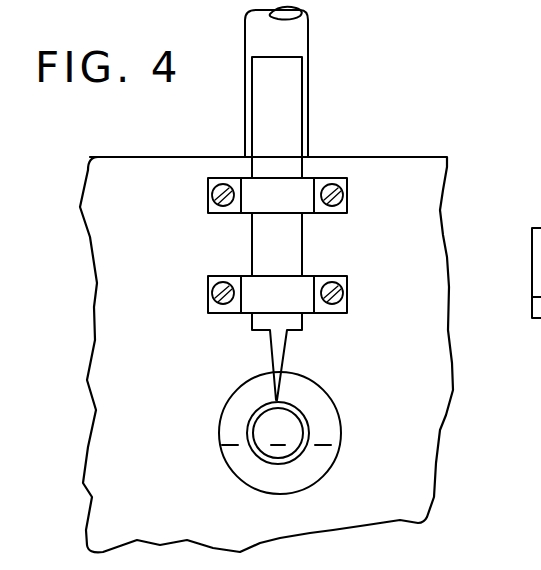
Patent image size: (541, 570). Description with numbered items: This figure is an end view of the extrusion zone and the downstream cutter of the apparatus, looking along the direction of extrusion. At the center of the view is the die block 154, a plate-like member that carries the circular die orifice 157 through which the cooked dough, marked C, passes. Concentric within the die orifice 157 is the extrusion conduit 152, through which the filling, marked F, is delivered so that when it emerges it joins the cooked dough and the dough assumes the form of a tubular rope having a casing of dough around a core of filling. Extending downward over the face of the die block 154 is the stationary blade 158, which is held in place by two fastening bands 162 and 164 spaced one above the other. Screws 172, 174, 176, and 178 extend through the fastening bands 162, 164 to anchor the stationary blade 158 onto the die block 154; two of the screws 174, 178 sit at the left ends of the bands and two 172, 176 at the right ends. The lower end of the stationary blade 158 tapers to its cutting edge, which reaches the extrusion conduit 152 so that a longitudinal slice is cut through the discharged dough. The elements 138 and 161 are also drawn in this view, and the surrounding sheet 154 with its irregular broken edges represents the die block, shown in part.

The tube 138 is at (308, 43).
The stationary blade 158 is at (288, 97).
The fastening band 162 is at (297, 178).
The fastening band 164 is at (300, 287).
The screw 172 is at (337, 183).
The screw 174 is at (222, 184).
The screw 176 is at (345, 290).
The screw 178 is at (212, 291).
The needle tip 161 is at (275, 400).
The extrusion conduit 152 is at (303, 411).
The die orifice 157 is at (310, 484).
The die block 154 is at (423, 415).